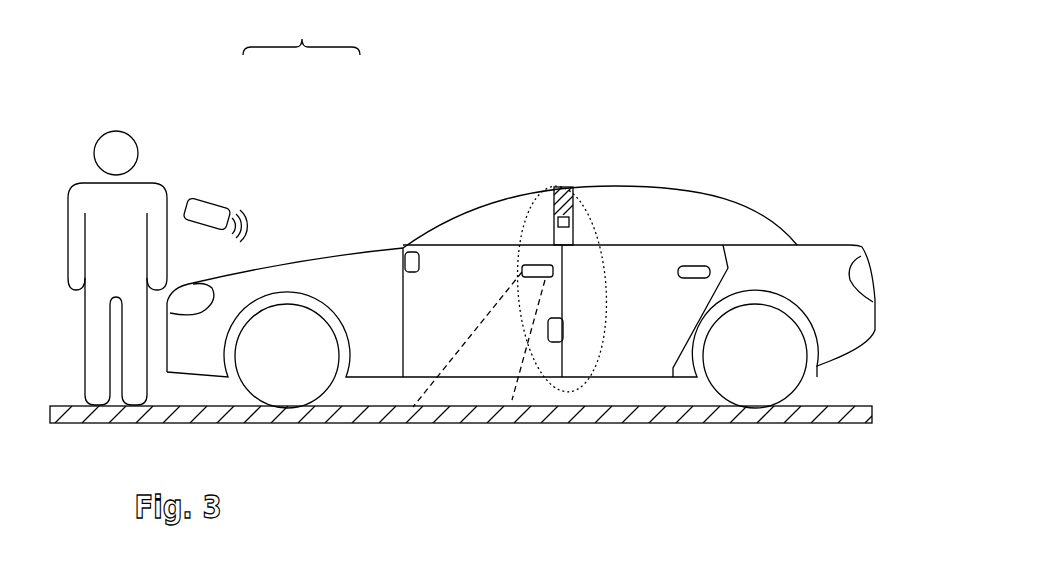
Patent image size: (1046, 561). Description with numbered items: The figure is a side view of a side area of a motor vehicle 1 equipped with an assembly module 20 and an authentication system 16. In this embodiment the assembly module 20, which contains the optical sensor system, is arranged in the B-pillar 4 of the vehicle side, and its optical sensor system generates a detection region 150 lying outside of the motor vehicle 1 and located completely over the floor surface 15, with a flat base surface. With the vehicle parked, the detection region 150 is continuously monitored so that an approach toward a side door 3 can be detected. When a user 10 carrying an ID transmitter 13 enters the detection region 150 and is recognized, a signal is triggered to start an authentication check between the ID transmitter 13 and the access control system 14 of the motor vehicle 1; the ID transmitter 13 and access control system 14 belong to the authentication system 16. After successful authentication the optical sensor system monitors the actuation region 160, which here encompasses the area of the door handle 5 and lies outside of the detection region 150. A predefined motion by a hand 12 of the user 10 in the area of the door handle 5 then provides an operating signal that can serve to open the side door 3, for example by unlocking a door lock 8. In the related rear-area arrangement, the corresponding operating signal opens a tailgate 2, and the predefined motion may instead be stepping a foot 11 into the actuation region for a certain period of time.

The motor vehicle 1 is at (789, 140).
The tailgate 2 is at (830, 243).
The side door 3 is at (447, 270).
The B-pillar 4 is at (616, 183).
The door handle 5 is at (530, 258).
The door lock 8 is at (556, 335).
The user 10 is at (100, 216).
The foot 11 is at (130, 403).
The hand 12 is at (77, 282).
The ID transmitter 13 is at (203, 203).
The access control system 14 is at (403, 252).
The floor surface 15 is at (849, 407).
The authentication system 16 is at (301, 31).
The assembly module 20 is at (572, 187).
The detection region 150 is at (657, 257).
The actuation region 160 is at (533, 264).